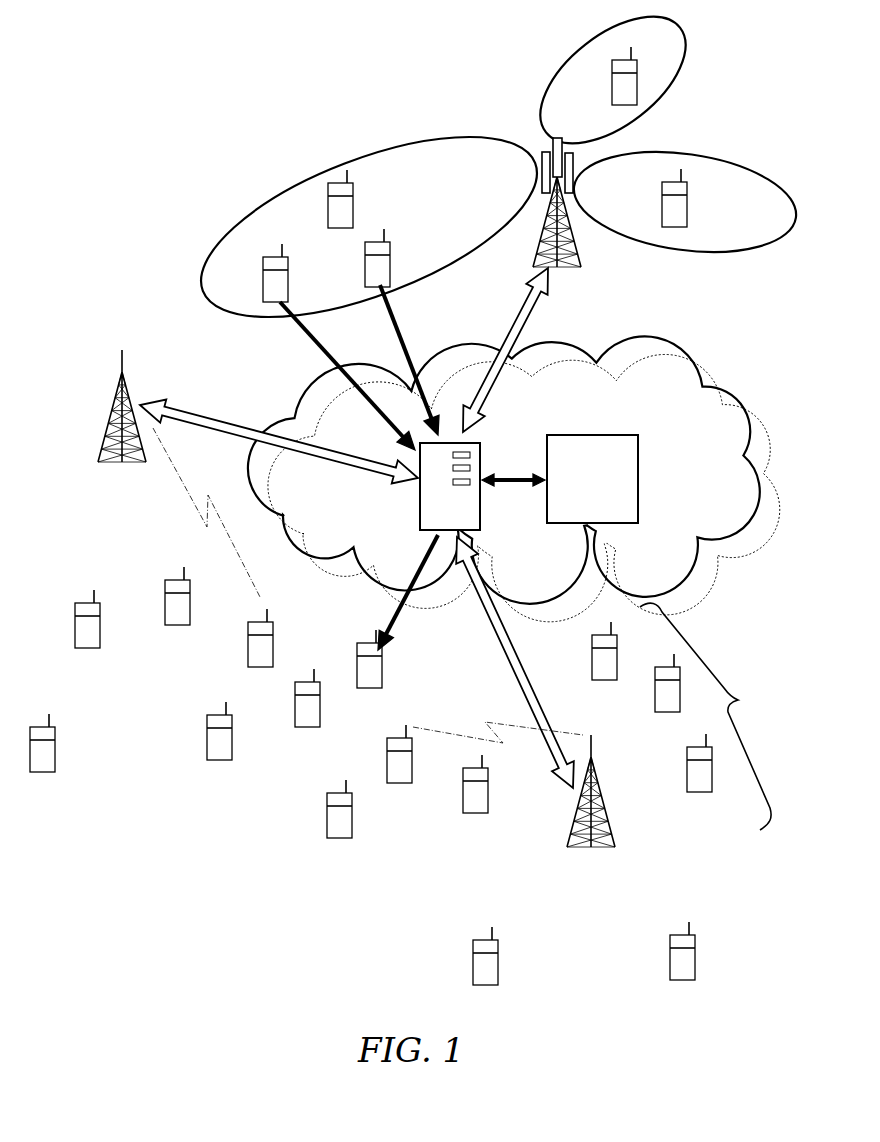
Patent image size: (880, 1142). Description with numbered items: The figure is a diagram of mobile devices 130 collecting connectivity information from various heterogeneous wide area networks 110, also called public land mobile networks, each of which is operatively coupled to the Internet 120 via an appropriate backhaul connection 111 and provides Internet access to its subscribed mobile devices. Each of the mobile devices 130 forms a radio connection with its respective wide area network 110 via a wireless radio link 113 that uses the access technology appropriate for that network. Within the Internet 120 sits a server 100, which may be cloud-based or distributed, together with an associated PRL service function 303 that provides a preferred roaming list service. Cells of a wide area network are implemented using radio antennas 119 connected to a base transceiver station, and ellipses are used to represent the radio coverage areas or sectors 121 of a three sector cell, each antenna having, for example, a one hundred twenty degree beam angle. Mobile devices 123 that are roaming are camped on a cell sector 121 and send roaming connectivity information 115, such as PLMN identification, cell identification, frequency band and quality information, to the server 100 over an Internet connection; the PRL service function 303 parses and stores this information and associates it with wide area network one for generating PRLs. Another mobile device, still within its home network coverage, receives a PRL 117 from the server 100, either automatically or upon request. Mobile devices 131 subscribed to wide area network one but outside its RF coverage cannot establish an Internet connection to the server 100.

The server 100 is at (450, 486).
The wide area network 110 is at (568, 210).
The backhaul connection 111 is at (530, 312).
The wireless radio link 113 is at (200, 520).
The roaming connectivity information 115 is at (398, 322).
The PRL 117 is at (405, 625).
The radio antennas 119 is at (545, 143).
The Internet 120 is at (514, 478).
The radio coverage areas or sectors 121 is at (390, 143).
The mobile devices 123 is at (262, 285).
The mobile devices 130 is at (681, 716).
The mobile devices 131 is at (57, 765).
The PRL service function 303 is at (560, 479).